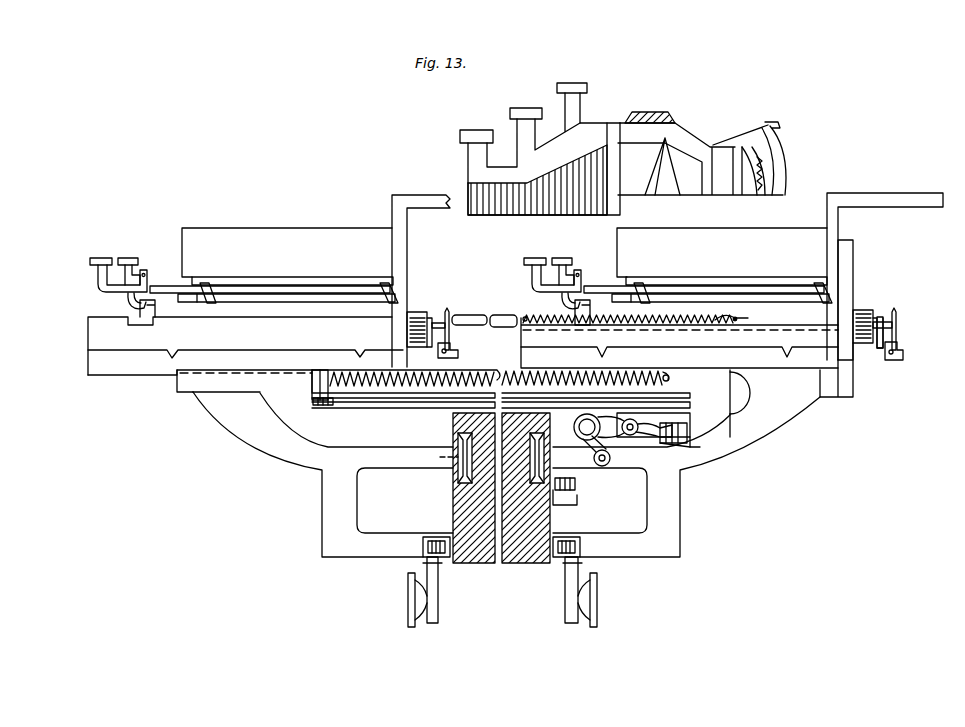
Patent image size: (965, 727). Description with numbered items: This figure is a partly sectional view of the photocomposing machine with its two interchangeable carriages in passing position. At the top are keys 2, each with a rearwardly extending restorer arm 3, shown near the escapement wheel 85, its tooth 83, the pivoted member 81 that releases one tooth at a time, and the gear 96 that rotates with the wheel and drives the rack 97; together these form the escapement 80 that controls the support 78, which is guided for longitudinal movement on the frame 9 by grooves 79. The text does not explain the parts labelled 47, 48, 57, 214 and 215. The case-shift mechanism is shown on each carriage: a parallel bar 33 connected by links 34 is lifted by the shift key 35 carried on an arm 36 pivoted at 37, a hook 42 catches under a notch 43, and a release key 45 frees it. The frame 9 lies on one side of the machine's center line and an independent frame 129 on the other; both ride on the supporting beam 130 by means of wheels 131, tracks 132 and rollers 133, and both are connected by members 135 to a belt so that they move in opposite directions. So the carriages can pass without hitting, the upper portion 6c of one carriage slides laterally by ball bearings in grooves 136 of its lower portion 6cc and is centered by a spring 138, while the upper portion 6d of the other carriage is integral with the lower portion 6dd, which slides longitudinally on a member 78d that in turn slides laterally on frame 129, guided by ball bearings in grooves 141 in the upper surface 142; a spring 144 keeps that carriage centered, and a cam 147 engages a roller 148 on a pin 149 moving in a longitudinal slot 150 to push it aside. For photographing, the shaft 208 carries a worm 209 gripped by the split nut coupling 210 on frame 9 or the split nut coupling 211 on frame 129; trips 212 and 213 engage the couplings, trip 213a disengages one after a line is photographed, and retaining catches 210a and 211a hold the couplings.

The key 2 is at (521, 107).
The restorer arm 3 is at (690, 142).
The wedge member 47 is at (665, 138).
The spring housing 48 is at (757, 158).
The bracket arm 57 is at (418, 195).
The upper portion of carriage 6d is at (287, 247).
The upper portion of carriage 6c is at (693, 245).
The parallel bar 33 is at (295, 277).
The links 34 is at (210, 290).
The shift key 35 is at (128, 258).
The arm 36 is at (147, 282).
The pivot 37 is at (186, 294).
The hook 42 is at (128, 300).
The notch 43 is at (150, 312).
The release key 45 is at (100, 258).
The lower portion of carriage 6dd is at (88, 345).
The member 78d is at (128, 376).
The grooves 79 is at (176, 350).
The lower portion of carriage 6cc is at (521, 336).
The support 78 is at (825, 396).
The grooves 136 is at (528, 317).
The spring 138 is at (747, 310).
The spring 144 is at (445, 387).
The shaft 208 is at (582, 372).
The longitudinal slot 150 is at (666, 372).
The cam 147 is at (398, 399).
The pin 149 is at (318, 399).
The roller 148 is at (335, 403).
The grooves 141 is at (200, 378).
The upper surface 142 is at (256, 365).
The frame 129 is at (276, 448).
The tracks 132 is at (455, 490).
The worm 209 is at (600, 500).
The supporting beam 130 is at (508, 562).
The wheels 131 is at (456, 472).
The rollers 133 is at (450, 558).
The members 135 is at (410, 598).
The rack 97 is at (414, 312).
The escapement wheel 85 is at (450, 337).
The escapement 80 is at (455, 302).
The gear 96 is at (437, 320).
The tooth 83 is at (886, 318).
The pivoted member 81 is at (460, 359).
The split nut coupling 210 is at (605, 463).
The pivot pin 214 is at (594, 460).
The trip 212 is at (578, 488).
The releasable retaining catch 210a is at (566, 506).
The split nut coupling 211 is at (655, 440).
The releasable retaining catch 211a is at (746, 391).
The trip 213 is at (687, 432).
The trip 213a is at (688, 446).
The spring 215 is at (690, 428).
The frame 9 is at (742, 436).